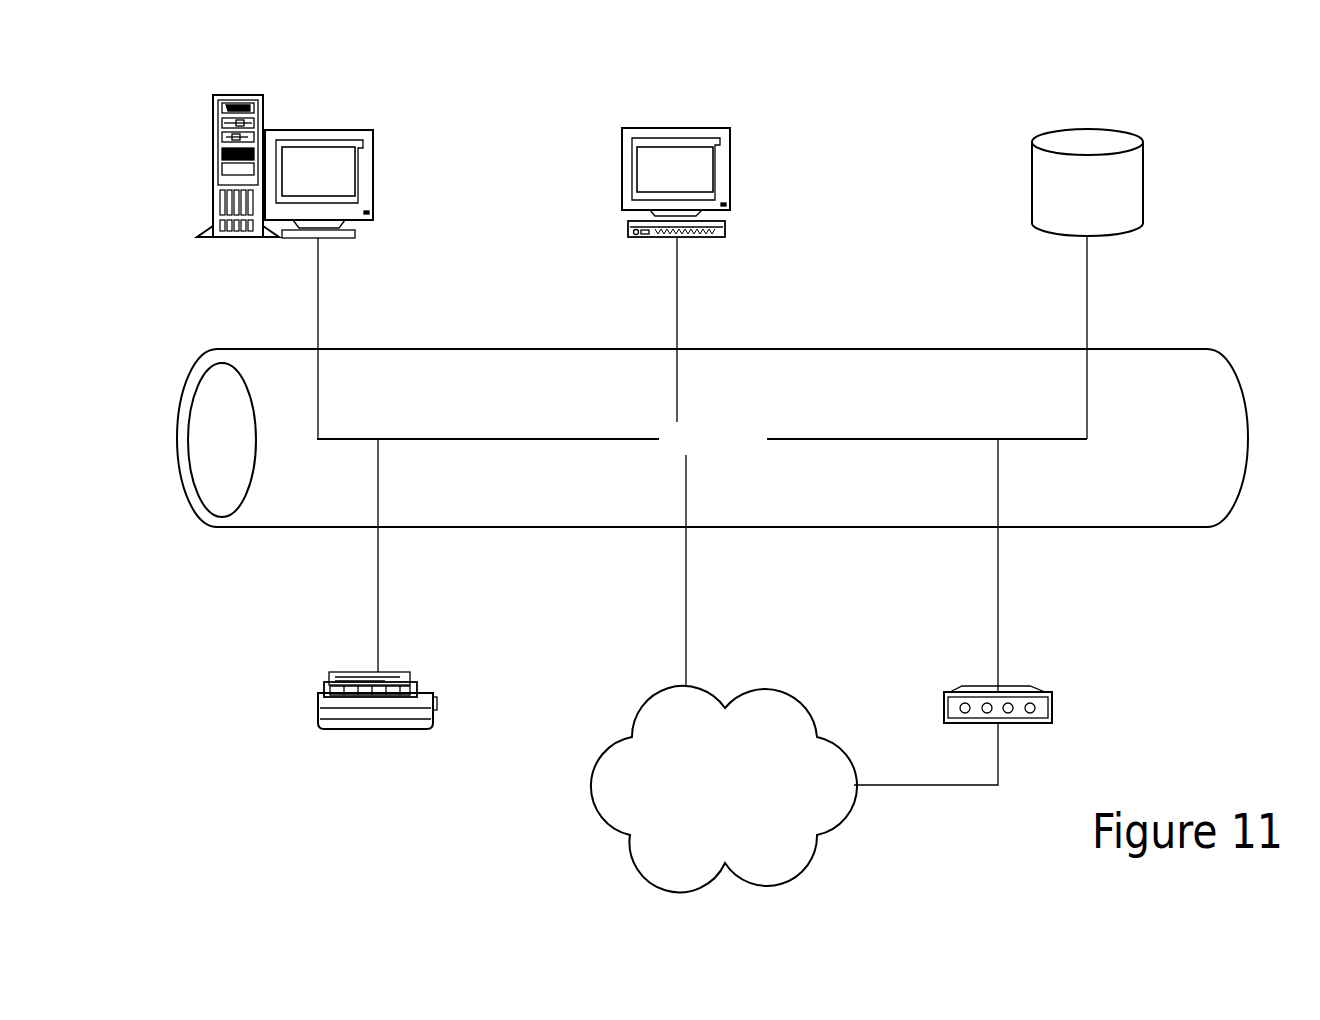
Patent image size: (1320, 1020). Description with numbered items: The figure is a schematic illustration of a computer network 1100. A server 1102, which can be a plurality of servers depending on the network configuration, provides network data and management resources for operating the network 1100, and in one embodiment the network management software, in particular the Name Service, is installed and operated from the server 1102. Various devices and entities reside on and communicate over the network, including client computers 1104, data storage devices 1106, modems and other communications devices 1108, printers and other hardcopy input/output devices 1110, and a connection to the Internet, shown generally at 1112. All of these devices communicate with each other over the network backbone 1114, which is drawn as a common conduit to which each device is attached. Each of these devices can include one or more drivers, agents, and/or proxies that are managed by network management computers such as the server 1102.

The computer network 1100 is at (158, 148).
The server 1102 is at (373, 167).
The client computers 1104 is at (730, 180).
The data storage devices 1106 is at (1143, 178).
The modems and other communications devices 1108 is at (1052, 705).
The printers and other hardcopy input/output devices 1110 is at (437, 697).
The Internet connection 1112 is at (762, 687).
The network backbone 1114 is at (222, 438).